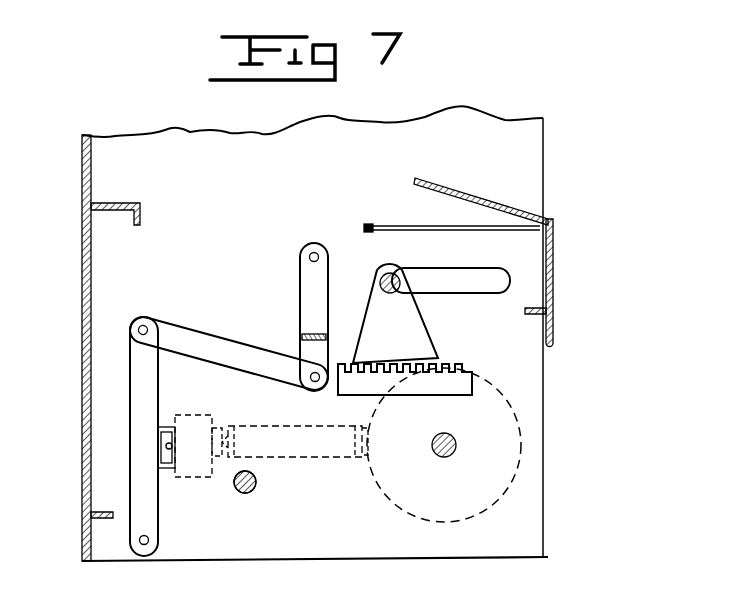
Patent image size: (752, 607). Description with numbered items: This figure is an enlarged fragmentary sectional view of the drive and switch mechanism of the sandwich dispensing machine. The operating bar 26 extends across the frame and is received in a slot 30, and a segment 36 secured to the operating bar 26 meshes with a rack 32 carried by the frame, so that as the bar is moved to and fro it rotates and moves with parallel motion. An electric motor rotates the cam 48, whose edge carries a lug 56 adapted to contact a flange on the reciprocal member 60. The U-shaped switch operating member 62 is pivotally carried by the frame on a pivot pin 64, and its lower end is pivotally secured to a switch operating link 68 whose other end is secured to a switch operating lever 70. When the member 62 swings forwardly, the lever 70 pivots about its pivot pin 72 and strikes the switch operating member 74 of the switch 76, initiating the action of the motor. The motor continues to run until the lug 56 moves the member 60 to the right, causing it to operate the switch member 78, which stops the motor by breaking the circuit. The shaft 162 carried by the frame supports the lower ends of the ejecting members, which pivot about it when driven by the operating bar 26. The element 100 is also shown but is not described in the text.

The operating bar 26 is at (397, 270).
The slot 30 is at (465, 276).
The rack 32 is at (460, 366).
The segment 36 is at (413, 327).
The cam 48 is at (530, 424).
The lug 56 is at (366, 417).
The reciprocal member 60 is at (318, 457).
The U-shaped switch operating member 62 is at (302, 335).
The pivot pin 64 is at (303, 248).
The switch operating link 68 is at (215, 348).
The switch operating lever 70 is at (130, 393).
The pivot pin 72 is at (137, 547).
The switch operating member 74 is at (169, 450).
The switch 76 is at (188, 413).
The switch member 78 is at (224, 427).
The ball 100 is at (256, 492).
The shaft 162 is at (242, 495).